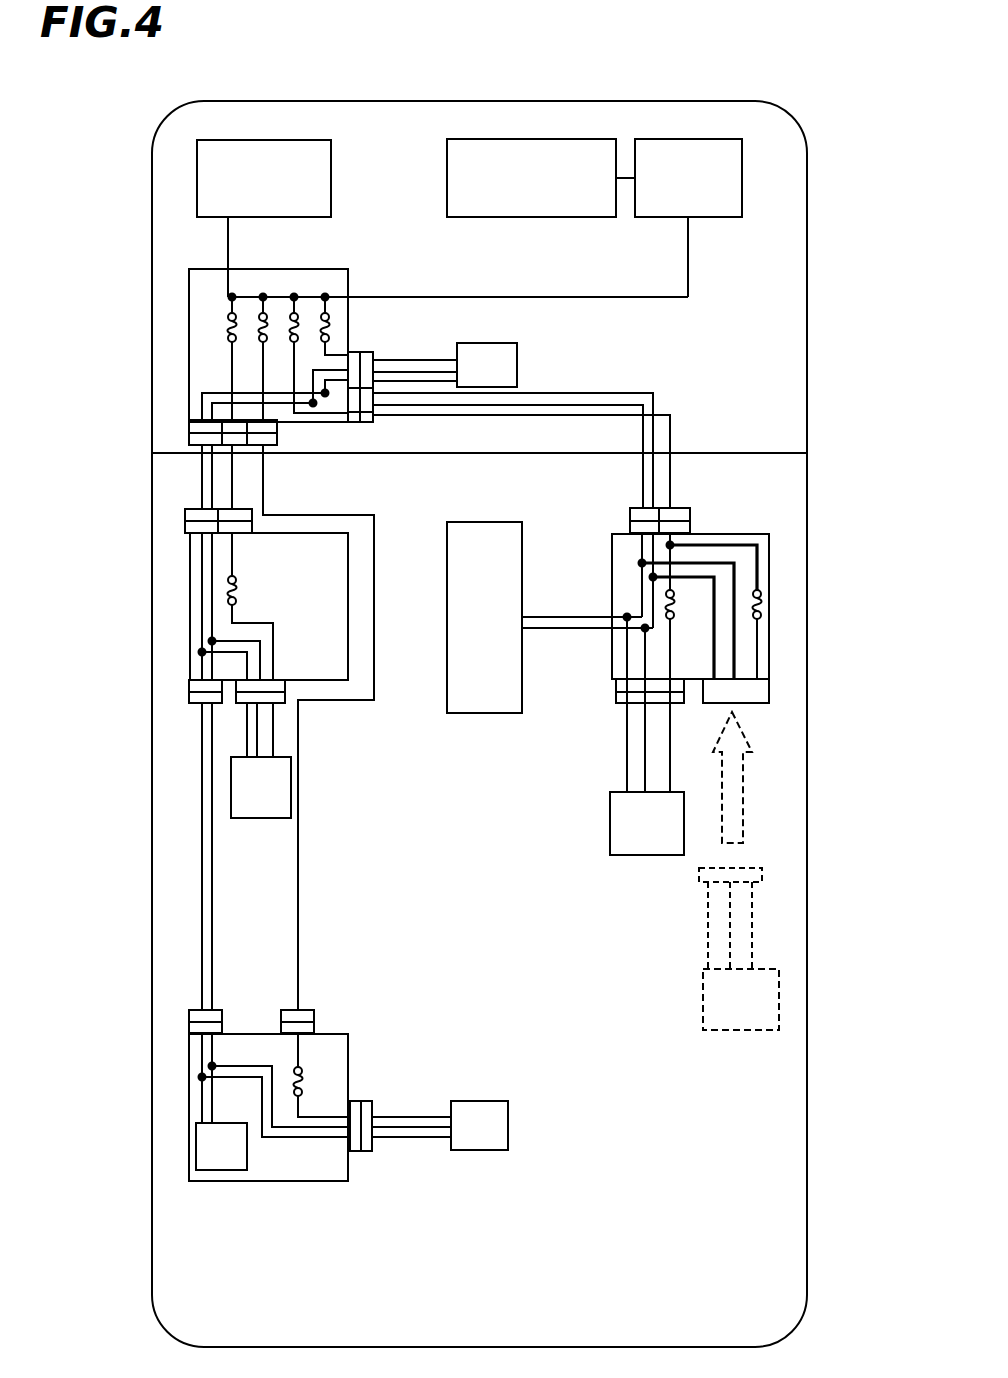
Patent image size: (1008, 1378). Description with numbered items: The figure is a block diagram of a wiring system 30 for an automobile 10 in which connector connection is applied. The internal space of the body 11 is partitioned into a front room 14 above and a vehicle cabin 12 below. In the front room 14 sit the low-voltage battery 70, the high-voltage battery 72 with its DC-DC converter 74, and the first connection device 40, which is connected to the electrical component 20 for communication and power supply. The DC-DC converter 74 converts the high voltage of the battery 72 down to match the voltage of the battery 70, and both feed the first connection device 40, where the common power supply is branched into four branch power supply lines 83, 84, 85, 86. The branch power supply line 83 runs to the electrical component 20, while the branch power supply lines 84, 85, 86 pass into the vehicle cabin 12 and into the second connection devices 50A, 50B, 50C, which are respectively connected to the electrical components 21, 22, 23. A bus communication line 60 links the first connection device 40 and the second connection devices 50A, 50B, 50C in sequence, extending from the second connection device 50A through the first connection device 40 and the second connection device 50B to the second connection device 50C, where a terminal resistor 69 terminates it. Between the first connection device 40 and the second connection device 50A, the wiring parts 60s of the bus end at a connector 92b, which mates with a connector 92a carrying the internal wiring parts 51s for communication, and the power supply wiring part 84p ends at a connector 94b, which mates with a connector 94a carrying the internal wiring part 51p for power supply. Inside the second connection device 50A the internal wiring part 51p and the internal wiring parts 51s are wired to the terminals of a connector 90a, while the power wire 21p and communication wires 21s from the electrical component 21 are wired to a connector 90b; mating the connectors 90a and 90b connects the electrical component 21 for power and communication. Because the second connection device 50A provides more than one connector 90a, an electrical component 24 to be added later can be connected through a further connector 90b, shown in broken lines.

The automobile 10 is at (813, 268).
The body 11 is at (807, 195).
The vehicle cabin 12 is at (807, 1145).
The front room 14 is at (807, 368).
The electrical component 20 is at (520, 366).
The electrical component 21 is at (645, 855).
The communication wires 21s is at (643, 782).
The power wire 21p is at (668, 745).
The electrical component 22 is at (260, 820).
The electrical component 23 is at (510, 1127).
The electrical component to be added later 24 is at (740, 1032).
The wiring system for an automobile 30 is at (168, 478).
The first connection device 40 is at (317, 269).
The second connection device 50A is at (742, 533).
The second connection device 50B is at (323, 515).
The second connection device 50C is at (333, 1034).
The internal wiring parts for communication 51s is at (642, 660).
The internal wiring part for power supply 51p is at (673, 650).
The bus communication line 60 is at (653, 478).
The wiring parts 60s is at (632, 392).
The terminal resistor 69 is at (222, 1172).
The battery 70 is at (265, 138).
The battery 72 is at (527, 139).
The DC-DC converter 74 is at (680, 139).
The branch power supply line 83 is at (393, 357).
The branch power supply line 84 is at (445, 418).
The power supply wiring part 84p is at (673, 437).
The branch power supply line 85 is at (233, 484).
The branch power supply line 86 is at (375, 583).
The connector 90a is at (616, 683).
The connector 90b is at (616, 700).
The connector 92a is at (628, 524).
The connector 92b is at (628, 514).
The connector 94a is at (692, 524).
The connector 94b is at (673, 506).